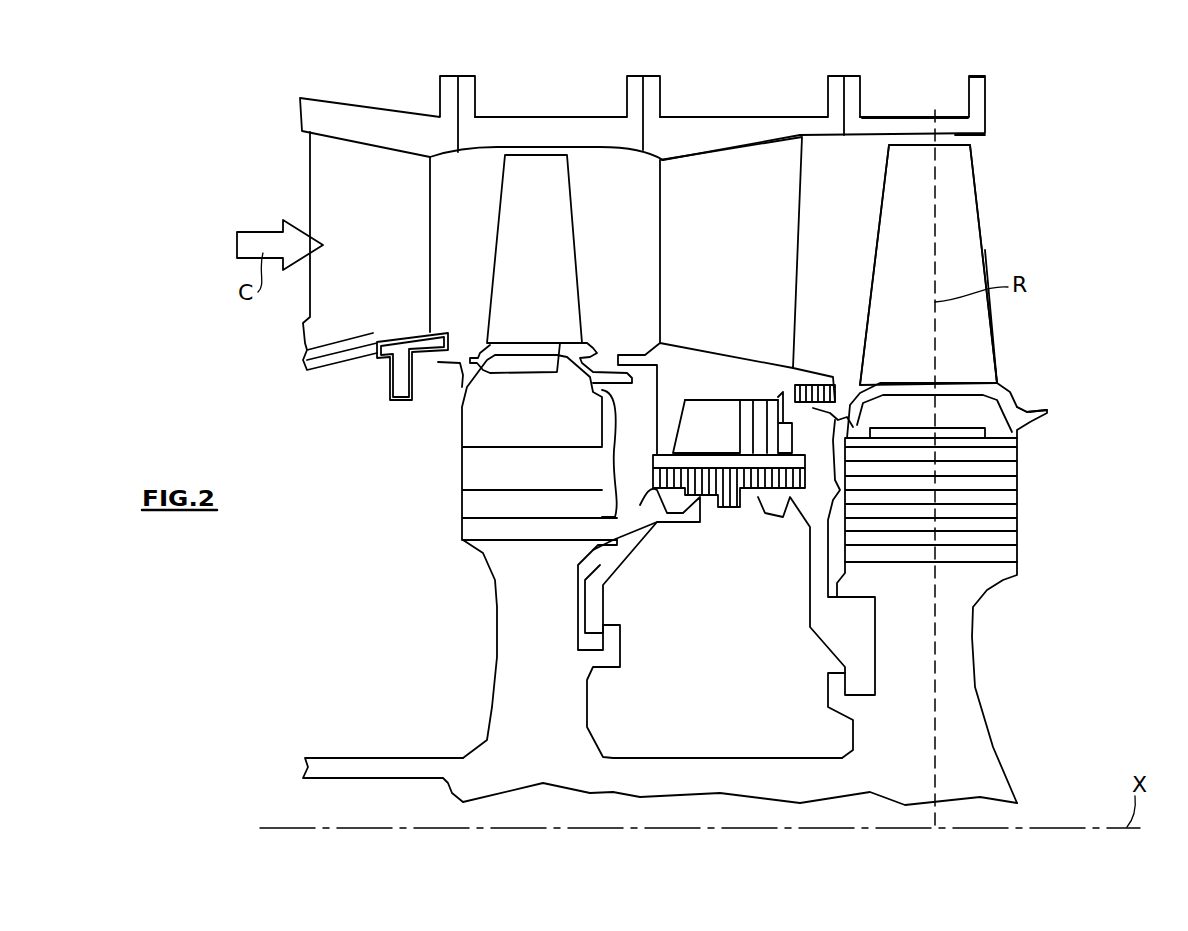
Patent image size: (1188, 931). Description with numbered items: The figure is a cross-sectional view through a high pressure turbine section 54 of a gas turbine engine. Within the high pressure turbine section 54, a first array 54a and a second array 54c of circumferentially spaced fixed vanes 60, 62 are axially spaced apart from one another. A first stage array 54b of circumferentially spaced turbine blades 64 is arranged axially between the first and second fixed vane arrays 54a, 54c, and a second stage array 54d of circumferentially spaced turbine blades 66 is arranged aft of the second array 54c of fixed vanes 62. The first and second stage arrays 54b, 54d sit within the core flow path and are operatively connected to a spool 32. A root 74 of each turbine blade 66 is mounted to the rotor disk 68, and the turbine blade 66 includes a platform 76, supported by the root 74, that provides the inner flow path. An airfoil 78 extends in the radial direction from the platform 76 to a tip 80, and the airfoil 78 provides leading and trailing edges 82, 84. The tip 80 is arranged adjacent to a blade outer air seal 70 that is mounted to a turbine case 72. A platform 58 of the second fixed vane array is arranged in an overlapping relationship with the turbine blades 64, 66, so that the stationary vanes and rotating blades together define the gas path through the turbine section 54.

The spool 32 is at (303, 768).
The high pressure turbine section 54 is at (642, 82).
The first array of fixed vanes 54a is at (362, 102).
The first stage array of turbine blades 54b is at (550, 110).
The second array of fixed vanes 54c is at (700, 110).
The second stage array of turbine blades 54d is at (923, 106).
The platform 58 is at (627, 358).
The fixed vane 60 is at (303, 215).
The fixed vane 62 is at (662, 205).
The turbine blade 64 is at (497, 228).
The turbine blade 66 is at (870, 237).
The rotor disk 68 is at (567, 700).
The blade outer air seal 70 is at (895, 127).
The turbine case 72 is at (978, 94).
The root 74 is at (922, 425).
The platform 76 is at (953, 390).
The airfoil 78 is at (960, 260).
The tip 80 is at (943, 140).
The leading edge 82 is at (868, 282).
The trailing edge 84 is at (997, 310).